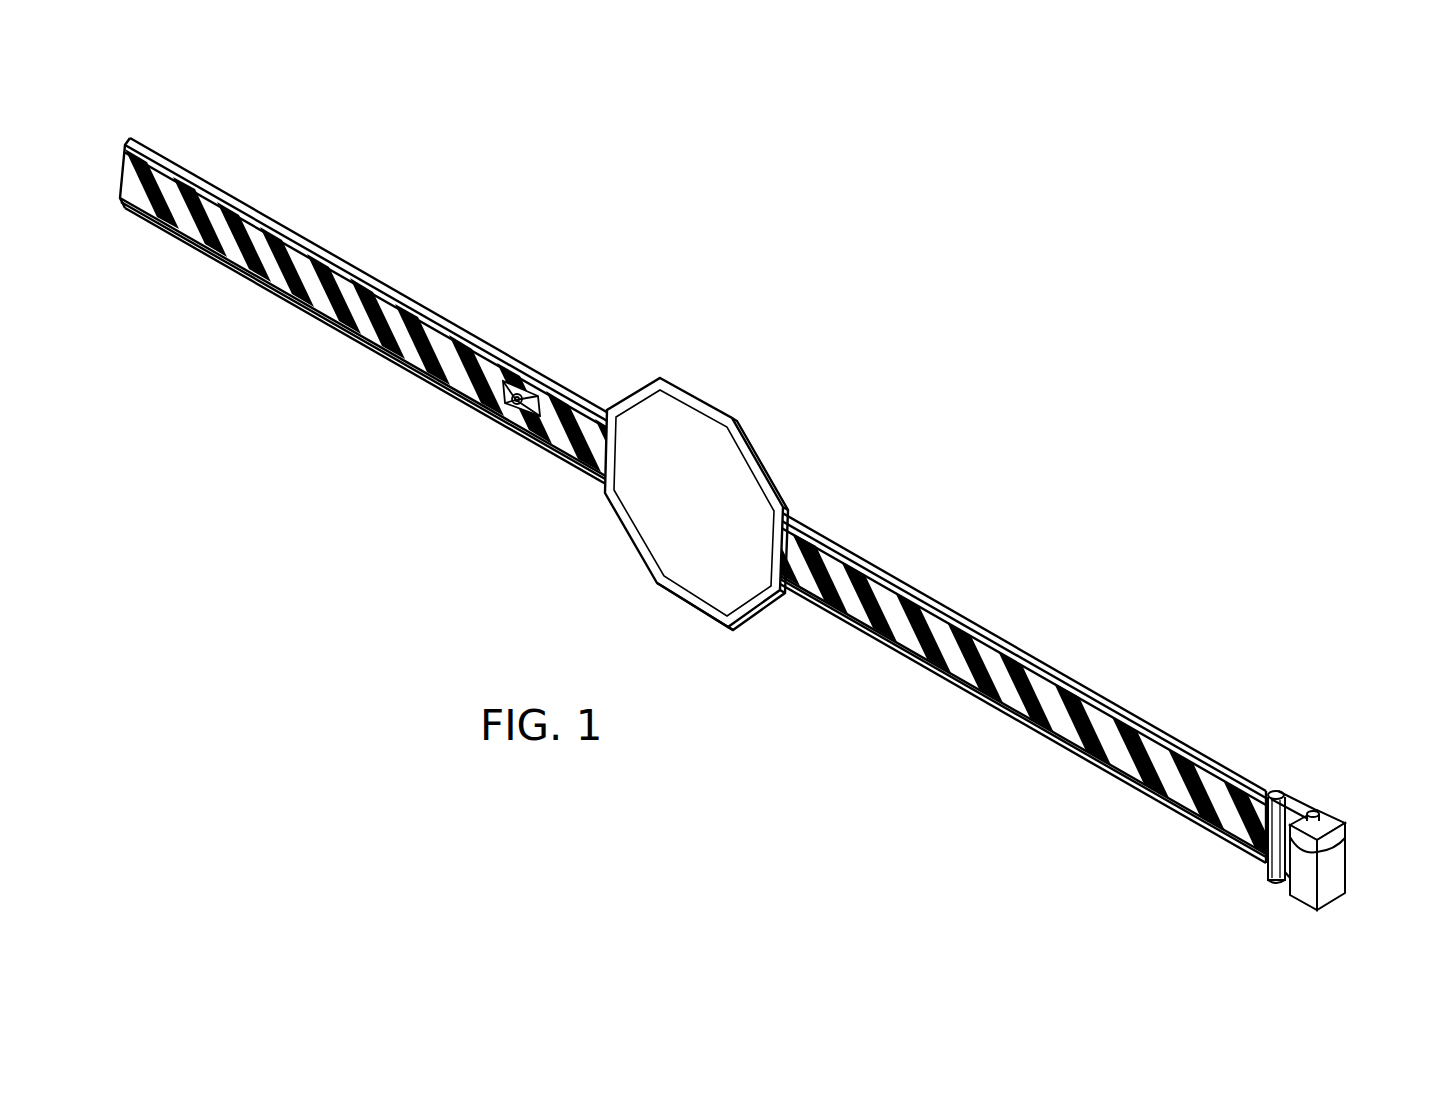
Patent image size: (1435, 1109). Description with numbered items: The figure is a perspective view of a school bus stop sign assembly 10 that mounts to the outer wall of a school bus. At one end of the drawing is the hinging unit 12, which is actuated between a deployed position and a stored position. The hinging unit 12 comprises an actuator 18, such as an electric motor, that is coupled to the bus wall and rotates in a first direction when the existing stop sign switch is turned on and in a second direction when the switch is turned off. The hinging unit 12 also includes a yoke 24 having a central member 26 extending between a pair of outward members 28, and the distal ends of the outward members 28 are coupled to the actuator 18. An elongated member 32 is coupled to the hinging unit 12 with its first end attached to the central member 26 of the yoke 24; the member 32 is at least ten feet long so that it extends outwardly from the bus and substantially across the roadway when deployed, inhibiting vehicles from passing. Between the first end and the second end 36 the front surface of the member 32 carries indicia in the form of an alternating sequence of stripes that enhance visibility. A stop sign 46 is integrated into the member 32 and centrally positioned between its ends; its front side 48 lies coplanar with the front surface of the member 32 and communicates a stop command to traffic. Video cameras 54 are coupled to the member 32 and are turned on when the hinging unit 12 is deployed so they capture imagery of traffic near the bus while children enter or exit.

The school bus stop sign assembly 10 is at (990, 305).
The hinging unit 12 is at (1345, 793).
The actuator 18 is at (1340, 898).
The yoke 24 is at (1345, 838).
The central member 26 is at (1258, 858).
The outward members 28 is at (1300, 795).
The member 32 is at (917, 588).
The second end 36 is at (117, 165).
The stop sign 46 is at (655, 375).
The front side 48 is at (702, 578).
The video cameras 54 is at (537, 420).